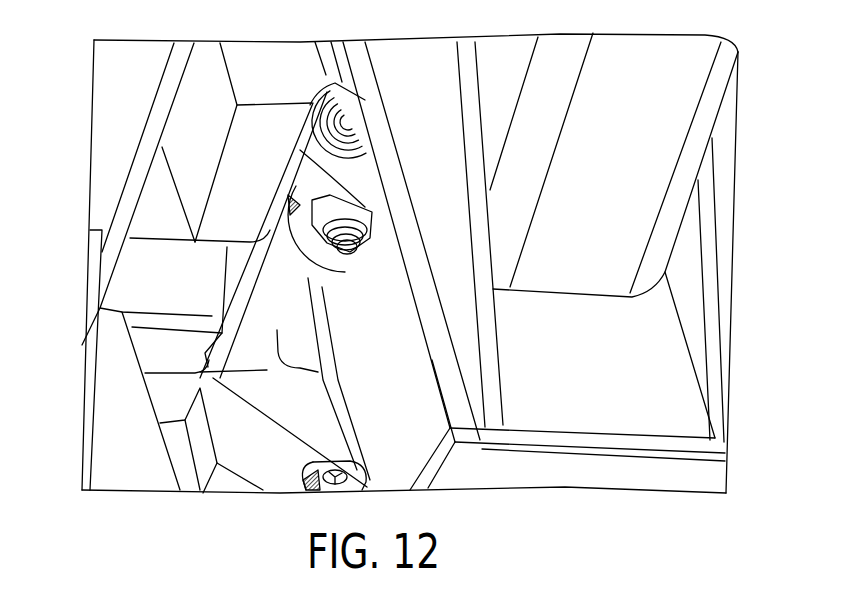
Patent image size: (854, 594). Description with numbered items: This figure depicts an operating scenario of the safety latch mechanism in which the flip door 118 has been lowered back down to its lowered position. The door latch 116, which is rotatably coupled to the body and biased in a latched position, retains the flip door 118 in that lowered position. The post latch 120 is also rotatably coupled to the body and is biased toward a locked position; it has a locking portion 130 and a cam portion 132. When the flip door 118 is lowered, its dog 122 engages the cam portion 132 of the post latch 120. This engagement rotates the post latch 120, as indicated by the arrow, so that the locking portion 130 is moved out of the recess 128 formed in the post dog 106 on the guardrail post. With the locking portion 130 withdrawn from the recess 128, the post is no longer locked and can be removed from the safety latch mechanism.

The post dog 106 is at (343, 433).
The door latch 116 is at (265, 448).
The flip door 118 is at (115, 121).
The post latch 120 is at (270, 282).
The dog 122 is at (202, 128).
The recess 128 is at (327, 357).
The locking portion 130 is at (213, 378).
The cam portion 132 is at (330, 133).